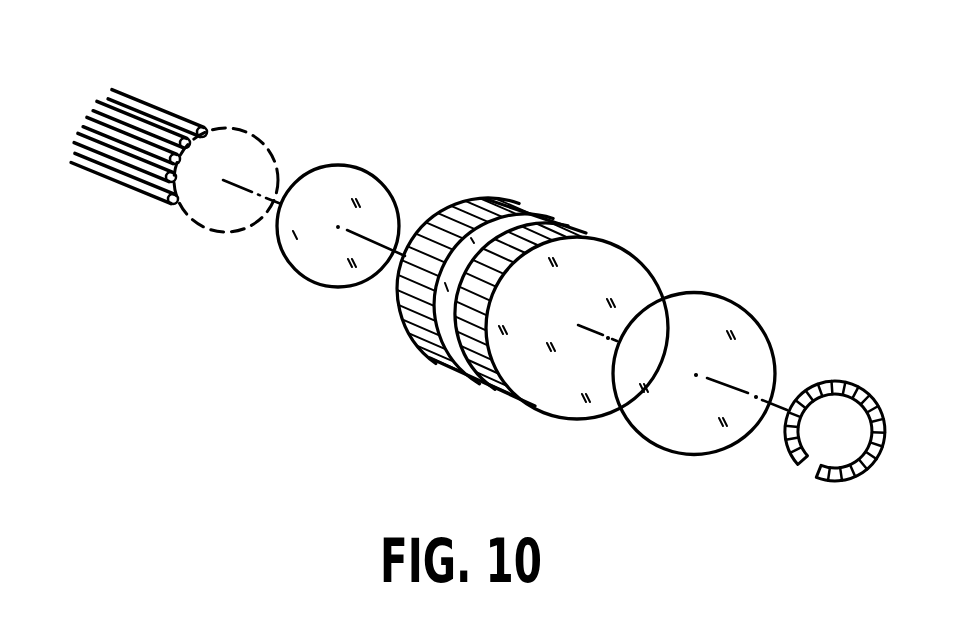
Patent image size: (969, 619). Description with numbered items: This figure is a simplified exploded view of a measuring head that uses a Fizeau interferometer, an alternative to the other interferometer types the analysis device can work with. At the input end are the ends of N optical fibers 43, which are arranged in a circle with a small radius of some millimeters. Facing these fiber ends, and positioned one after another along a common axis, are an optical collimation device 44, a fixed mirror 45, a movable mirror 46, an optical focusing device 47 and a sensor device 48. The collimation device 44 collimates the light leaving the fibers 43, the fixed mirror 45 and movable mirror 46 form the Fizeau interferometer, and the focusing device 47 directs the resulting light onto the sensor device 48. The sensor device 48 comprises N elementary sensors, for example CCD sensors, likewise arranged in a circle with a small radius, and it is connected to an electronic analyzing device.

The optical fibers 43 is at (127, 131).
The optical collimation device 44 is at (362, 170).
The fixed mirror 45 is at (520, 206).
The movable mirror 46 is at (580, 232).
The optical focusing device 47 is at (715, 293).
The sensor device 48 is at (843, 380).